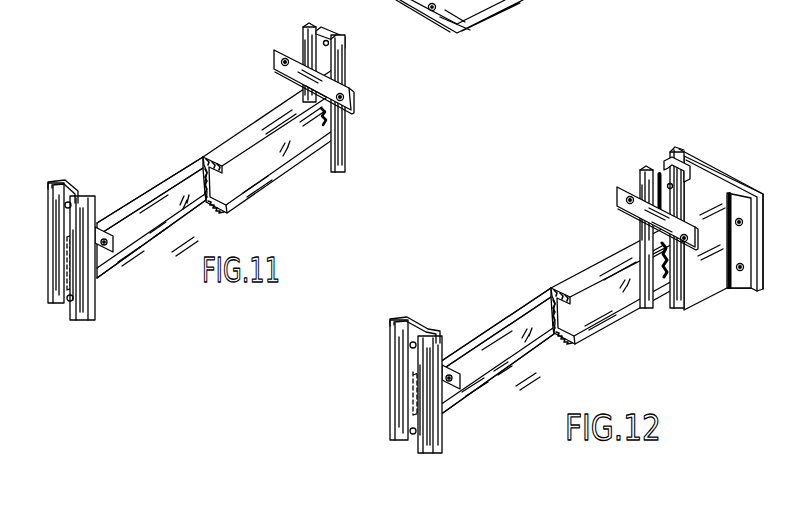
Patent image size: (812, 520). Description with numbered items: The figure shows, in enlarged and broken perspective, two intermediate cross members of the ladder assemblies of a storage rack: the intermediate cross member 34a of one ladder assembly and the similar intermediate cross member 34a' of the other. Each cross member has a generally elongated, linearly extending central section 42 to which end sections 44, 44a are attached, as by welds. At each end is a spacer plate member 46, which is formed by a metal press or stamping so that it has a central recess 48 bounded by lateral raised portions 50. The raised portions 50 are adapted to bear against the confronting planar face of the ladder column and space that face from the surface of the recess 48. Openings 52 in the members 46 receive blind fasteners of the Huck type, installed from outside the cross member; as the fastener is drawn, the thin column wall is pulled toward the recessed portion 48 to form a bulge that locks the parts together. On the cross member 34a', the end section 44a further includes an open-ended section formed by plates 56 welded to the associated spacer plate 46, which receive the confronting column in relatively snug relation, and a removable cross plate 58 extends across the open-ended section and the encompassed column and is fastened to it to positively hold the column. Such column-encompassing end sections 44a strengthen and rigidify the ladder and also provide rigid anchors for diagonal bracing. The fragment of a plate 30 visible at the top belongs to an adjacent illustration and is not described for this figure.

In FIG. 11, the mounting plate 30 is at (478, 16).
In FIG. 11, the intermediate cross member 34a is at (216, 173).
In FIG. 12, the intermediate cross member 34a' is at (565, 314).
In FIG. 11, the central section 42 is at (255, 163).
In FIG. 12, the central section 42 is at (598, 300).
In FIG. 11, the end section 44 is at (203, 177).
In FIG. 12, the end section 44 is at (517, 299).
In FIG. 11, the end section 44a is at (325, 30).
In FIG. 12, the end section 44a is at (695, 223).
In FIG. 11, the spacer plate member 46 is at (66, 181).
In FIG. 12, the spacer plate member 46 is at (403, 318).
In FIG. 11, the central recess 48 is at (66, 216).
In FIG. 12, the central recess 48 is at (416, 362).
In FIG. 11, the raised portions 50 is at (53, 262).
In FIG. 12, the raised portions 50 is at (398, 412).
In FIG. 11, the openings 52 is at (70, 202).
In FIG. 12, the openings 52 is at (418, 335).
In FIG. 12, the plates 56 is at (646, 190).
In FIG. 12, the cross plate 58 is at (732, 176).